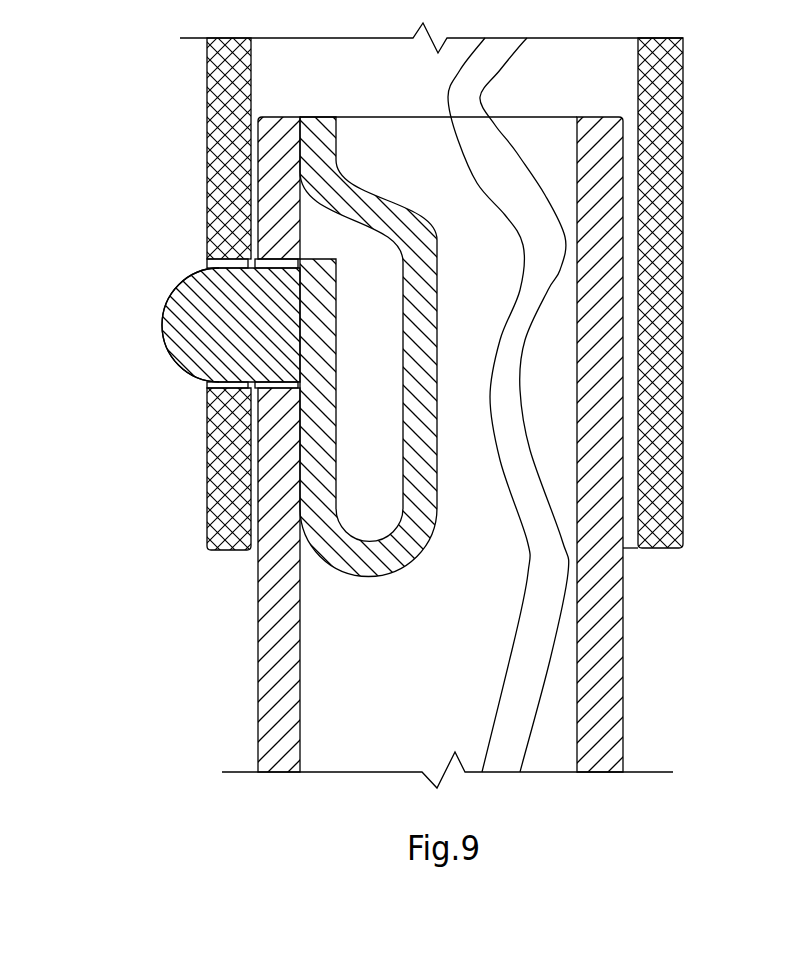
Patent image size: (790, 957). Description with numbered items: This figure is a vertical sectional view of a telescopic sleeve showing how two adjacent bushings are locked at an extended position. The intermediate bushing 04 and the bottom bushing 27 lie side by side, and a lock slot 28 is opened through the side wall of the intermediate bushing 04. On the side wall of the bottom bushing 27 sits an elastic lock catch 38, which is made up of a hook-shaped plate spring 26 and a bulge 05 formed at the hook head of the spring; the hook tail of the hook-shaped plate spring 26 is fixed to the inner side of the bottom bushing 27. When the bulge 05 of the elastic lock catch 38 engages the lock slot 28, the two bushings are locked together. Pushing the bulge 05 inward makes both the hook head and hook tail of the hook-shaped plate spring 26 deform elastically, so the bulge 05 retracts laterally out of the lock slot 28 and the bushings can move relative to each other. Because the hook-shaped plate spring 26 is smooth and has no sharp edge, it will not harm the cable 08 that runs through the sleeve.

The intermediate bushing 04 is at (207, 113).
The cable 08 is at (520, 265).
The bulge 05 is at (164, 300).
The elastic lock catch 38 is at (235, 305).
The lock slot 28 is at (207, 385).
The hook-shaped plate spring 26 is at (397, 422).
The bottom bushing 27 is at (258, 692).